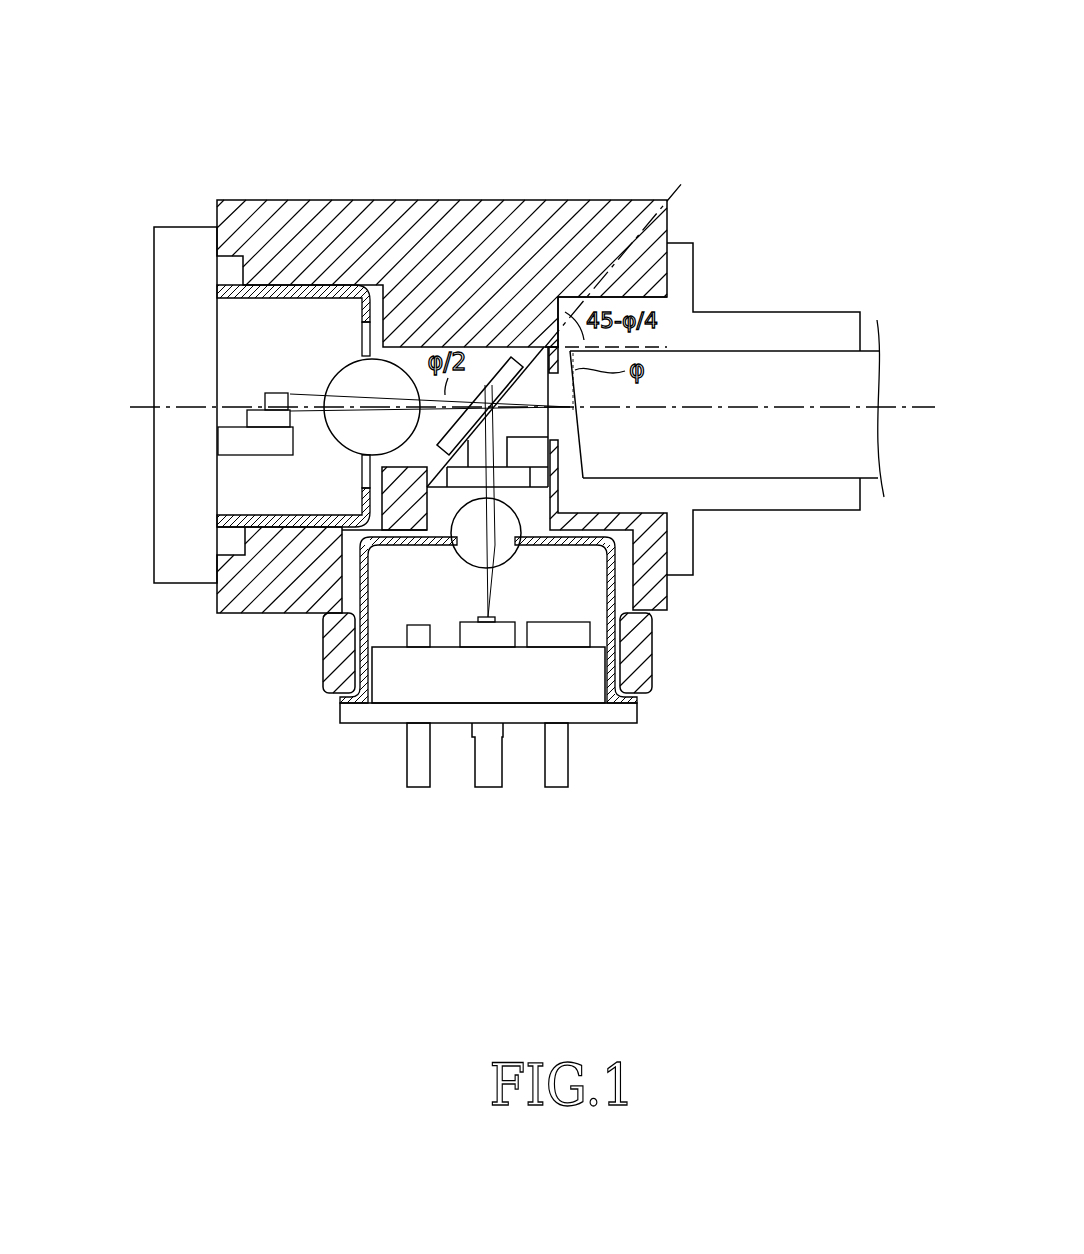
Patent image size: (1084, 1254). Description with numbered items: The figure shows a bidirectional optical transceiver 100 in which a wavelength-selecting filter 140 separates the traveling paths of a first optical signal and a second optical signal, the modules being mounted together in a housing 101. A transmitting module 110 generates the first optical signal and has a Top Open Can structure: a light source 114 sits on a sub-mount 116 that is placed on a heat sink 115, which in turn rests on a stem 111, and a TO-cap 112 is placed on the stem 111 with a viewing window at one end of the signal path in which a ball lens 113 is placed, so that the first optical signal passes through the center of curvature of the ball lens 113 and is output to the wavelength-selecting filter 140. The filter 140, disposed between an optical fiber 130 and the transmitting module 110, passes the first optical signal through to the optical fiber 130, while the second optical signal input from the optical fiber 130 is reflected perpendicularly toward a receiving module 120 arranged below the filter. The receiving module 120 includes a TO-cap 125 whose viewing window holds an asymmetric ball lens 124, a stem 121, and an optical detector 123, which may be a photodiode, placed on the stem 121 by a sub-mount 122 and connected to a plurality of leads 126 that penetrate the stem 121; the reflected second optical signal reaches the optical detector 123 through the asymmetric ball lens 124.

The bidirectional optical transceiver 100 is at (645, 39).
The housing 101 is at (405, 210).
The transmitting module 110 is at (172, 205).
The stem 111 is at (165, 262).
The TO-cap 112 is at (243, 282).
The ball lens 113 is at (352, 390).
The light source 114 is at (277, 403).
The heat sink 115 is at (230, 442).
The sub-mount 116 is at (255, 420).
The receiving module 120 is at (388, 746).
The stem 121 is at (636, 712).
The sub-mount 122 is at (470, 640).
The optical detector 123 is at (495, 614).
The asymmetric ball lens 124 is at (507, 523).
The TO-cap 125 is at (340, 703).
The leads 126 is at (557, 762).
The optical fiber 130 is at (853, 440).
The wavelength-selecting filter 140 is at (498, 382).